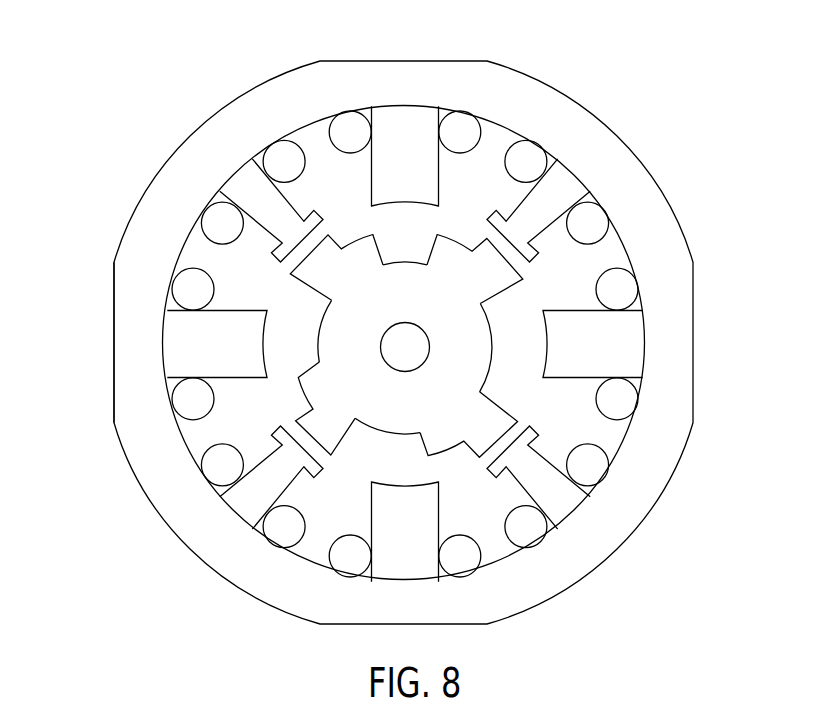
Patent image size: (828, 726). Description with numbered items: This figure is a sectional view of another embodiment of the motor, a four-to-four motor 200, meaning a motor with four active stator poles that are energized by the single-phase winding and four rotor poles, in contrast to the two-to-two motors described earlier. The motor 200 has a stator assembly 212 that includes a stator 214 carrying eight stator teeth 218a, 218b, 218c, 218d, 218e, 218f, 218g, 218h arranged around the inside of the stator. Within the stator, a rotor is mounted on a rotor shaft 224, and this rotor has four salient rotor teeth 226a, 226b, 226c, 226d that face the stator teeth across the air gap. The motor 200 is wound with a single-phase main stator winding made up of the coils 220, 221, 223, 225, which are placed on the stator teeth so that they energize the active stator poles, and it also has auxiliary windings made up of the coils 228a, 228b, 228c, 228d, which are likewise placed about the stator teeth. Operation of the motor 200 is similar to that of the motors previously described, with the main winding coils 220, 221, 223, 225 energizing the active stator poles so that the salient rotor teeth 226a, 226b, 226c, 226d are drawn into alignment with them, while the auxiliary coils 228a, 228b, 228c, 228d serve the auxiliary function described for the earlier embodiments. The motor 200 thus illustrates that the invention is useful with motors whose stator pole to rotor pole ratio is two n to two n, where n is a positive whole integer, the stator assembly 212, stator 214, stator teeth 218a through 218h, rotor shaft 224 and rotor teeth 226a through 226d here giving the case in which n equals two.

The 4:4 motor 200 is at (395, 339).
The stator assembly 212 is at (222, 106).
The stator 214 is at (113, 308).
The stator tooth 218a is at (436, 176).
The stator tooth 218b is at (567, 193).
The stator tooth 218c is at (622, 364).
The stator tooth 218d is at (578, 497).
The stator tooth 218e is at (435, 546).
The stator tooth 218f is at (262, 490).
The stator tooth 218g is at (233, 360).
The stator tooth 218h is at (252, 190).
The coil 220 is at (463, 130).
The coil 221 is at (625, 292).
The coil 223 is at (463, 556).
The rotor shaft 224 is at (428, 342).
The coil 225 is at (185, 405).
The salient rotor tooth 226a is at (370, 286).
The salient rotor tooth 226b is at (477, 300).
The salient rotor tooth 226c is at (485, 432).
The salient rotor tooth 226d is at (373, 406).
The auxiliary winding coil 228a is at (540, 160).
The auxiliary winding coil 228b is at (590, 467).
The auxiliary winding coil 228c is at (283, 533).
The auxiliary winding coil 228d is at (217, 222).